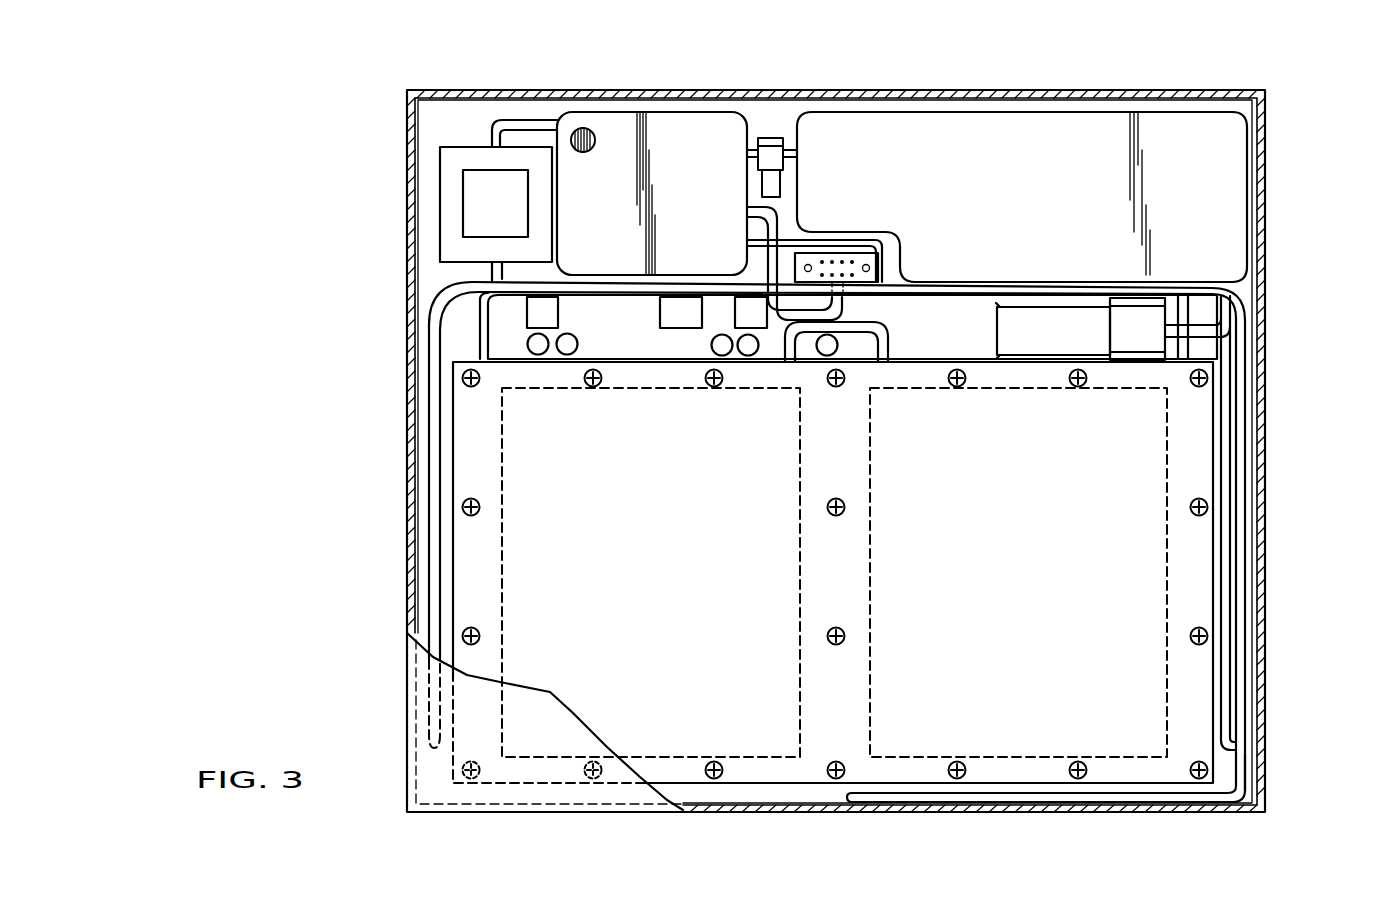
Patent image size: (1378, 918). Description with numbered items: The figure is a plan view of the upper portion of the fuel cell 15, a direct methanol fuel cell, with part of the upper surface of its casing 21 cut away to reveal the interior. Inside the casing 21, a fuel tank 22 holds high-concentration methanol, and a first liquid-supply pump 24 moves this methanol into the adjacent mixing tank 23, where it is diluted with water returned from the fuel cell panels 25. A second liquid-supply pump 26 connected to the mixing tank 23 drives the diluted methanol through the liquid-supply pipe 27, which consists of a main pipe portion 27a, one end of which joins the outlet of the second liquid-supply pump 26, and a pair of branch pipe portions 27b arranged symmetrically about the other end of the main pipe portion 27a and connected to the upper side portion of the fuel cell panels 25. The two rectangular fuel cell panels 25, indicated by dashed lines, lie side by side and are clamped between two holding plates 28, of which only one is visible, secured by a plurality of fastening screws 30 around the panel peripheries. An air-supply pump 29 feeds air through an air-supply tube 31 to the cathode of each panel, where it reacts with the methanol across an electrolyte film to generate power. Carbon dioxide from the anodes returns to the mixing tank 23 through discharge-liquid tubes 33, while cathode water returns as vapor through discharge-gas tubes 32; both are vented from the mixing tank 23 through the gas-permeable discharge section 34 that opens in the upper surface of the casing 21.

The fuel cell 15 is at (1283, 456).
The casing 21 is at (1267, 243).
The fuel tank 22 is at (1194, 130).
The mixing tank 23 is at (672, 128).
The first liquid-supply pump 24 is at (769, 136).
The fuel cell panels 25 is at (766, 742).
The second liquid-supply pump 26 is at (447, 172).
The liquid-supply pipe 27 is at (490, 270).
The main pipe portion 27a is at (636, 296).
The branch pipe portions 27b is at (785, 346).
The holding plates 28 is at (1173, 773).
The air-supply pump 29 is at (1068, 318).
The fastening screws 30 is at (462, 633).
The air-supply tube 31 is at (1243, 764).
The discharge-gas tubes 32 is at (483, 337).
The discharge-liquid tubes 33 is at (433, 432).
The discharge section 34 is at (590, 132).